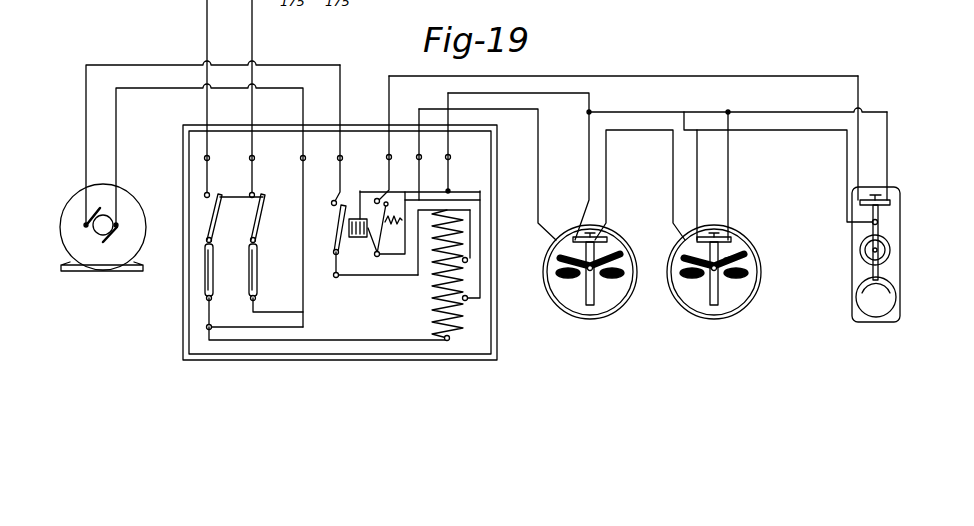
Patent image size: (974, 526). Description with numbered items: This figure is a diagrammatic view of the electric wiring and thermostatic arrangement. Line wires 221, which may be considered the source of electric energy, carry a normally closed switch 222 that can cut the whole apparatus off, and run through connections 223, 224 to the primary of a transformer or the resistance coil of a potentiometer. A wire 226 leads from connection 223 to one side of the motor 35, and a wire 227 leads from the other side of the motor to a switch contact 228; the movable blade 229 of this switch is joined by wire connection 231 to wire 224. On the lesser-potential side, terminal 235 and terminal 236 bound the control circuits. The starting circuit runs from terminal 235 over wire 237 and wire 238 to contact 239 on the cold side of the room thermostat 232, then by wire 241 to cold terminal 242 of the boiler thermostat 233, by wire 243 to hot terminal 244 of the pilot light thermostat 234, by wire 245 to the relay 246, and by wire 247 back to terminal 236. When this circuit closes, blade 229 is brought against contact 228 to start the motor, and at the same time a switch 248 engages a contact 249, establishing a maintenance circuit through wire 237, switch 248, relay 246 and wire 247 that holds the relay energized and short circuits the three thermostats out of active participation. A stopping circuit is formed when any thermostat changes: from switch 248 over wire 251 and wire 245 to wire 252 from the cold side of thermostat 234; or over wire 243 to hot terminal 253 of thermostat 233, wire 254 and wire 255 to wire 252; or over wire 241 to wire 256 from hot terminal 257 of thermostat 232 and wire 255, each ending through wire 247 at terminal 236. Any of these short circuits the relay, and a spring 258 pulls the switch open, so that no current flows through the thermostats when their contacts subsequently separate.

The line wires 221 is at (252, 32).
The wire 227 is at (86, 145).
The motor 35 is at (76, 241).
The switch 222 is at (209, 235).
The wire 226 is at (244, 330).
The wire connection 231 is at (327, 268).
The connection 223 is at (319, 342).
The movable blade 229 is at (455, 207).
The relay 246 is at (363, 238).
The switch contact 228 is at (336, 201).
The wire 238 is at (389, 172).
The contact 249 is at (376, 198).
The spring 258 is at (392, 215).
The wire 251 is at (407, 210).
The wire 247 is at (458, 192).
The switch 248 is at (455, 207).
The wire 237 is at (470, 223).
The connection 224 is at (418, 267).
The terminal 235 is at (466, 262).
The terminal 236 is at (466, 300).
The wire 245 is at (538, 142).
The wire 252 is at (590, 137).
The wire 255 is at (686, 112).
The wire 254 is at (731, 140).
The wire 243 is at (673, 207).
The wire 241 is at (823, 131).
The wire 256 is at (889, 142).
The pilot light thermostat 234 is at (618, 300).
The hot terminal 244 is at (614, 228).
The boiler thermostat 233 is at (742, 298).
The cold terminal 242 is at (712, 238).
The hot terminal 253 is at (740, 254).
The room thermostat 232 is at (897, 268).
The contact 239 is at (863, 199).
The hot terminal 257 is at (898, 202).